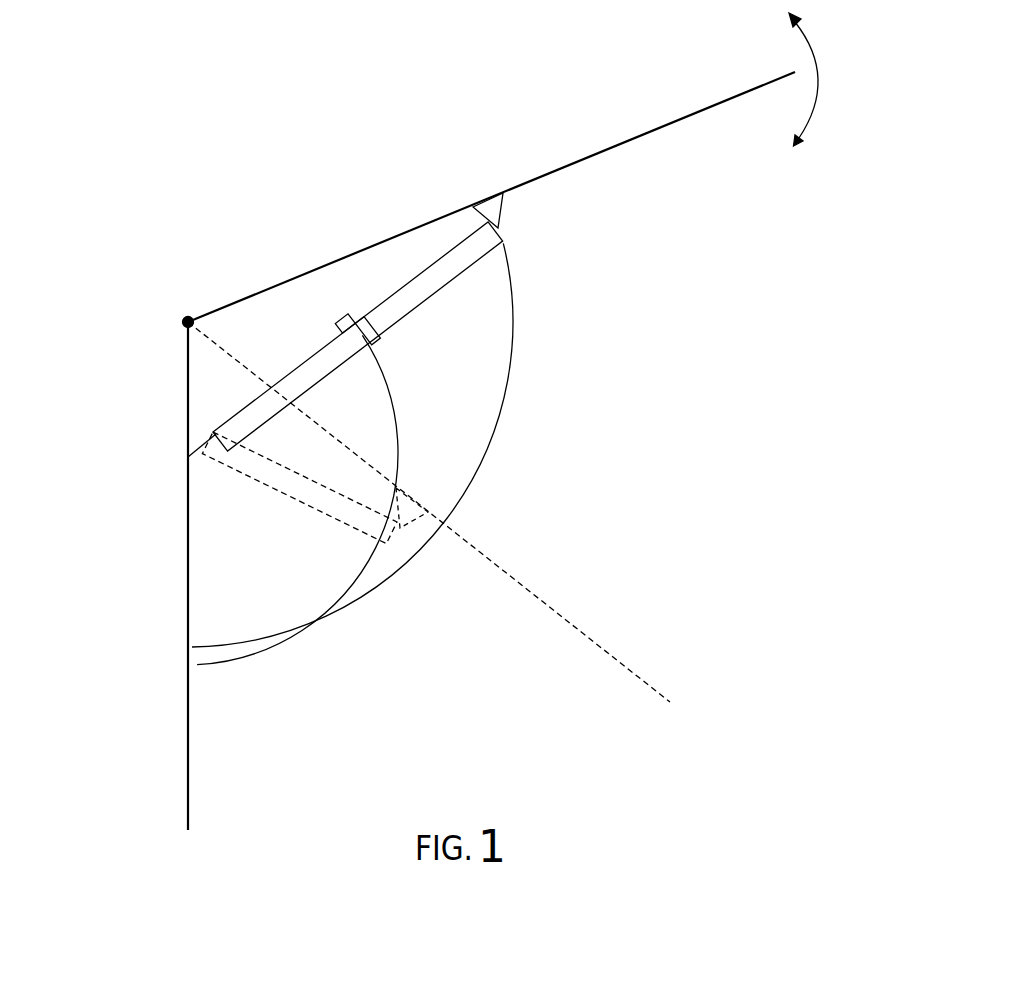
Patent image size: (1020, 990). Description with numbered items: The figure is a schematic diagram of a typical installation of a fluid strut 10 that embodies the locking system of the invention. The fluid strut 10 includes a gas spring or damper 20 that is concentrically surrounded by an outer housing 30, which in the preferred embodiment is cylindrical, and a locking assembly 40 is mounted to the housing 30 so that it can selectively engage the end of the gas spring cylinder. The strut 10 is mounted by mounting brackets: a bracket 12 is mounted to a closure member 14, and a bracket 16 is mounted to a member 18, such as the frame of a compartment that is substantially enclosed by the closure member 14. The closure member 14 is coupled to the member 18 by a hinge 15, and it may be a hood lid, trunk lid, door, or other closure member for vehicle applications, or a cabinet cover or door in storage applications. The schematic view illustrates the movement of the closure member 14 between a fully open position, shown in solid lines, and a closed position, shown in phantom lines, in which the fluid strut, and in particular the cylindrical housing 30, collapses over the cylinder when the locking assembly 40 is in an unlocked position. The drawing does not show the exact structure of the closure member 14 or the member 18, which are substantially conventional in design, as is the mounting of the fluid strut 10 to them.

The fluid strut 10 is at (458, 322).
The mounting bracket 12 is at (503, 208).
The closure member 14 is at (665, 127).
The hinge 15 is at (186, 322).
The mounting bracket 16 is at (212, 433).
The member 18 is at (188, 745).
The gas spring or damper 20 is at (332, 372).
The outer housing 30 is at (460, 275).
The locking assembly 40 is at (350, 312).